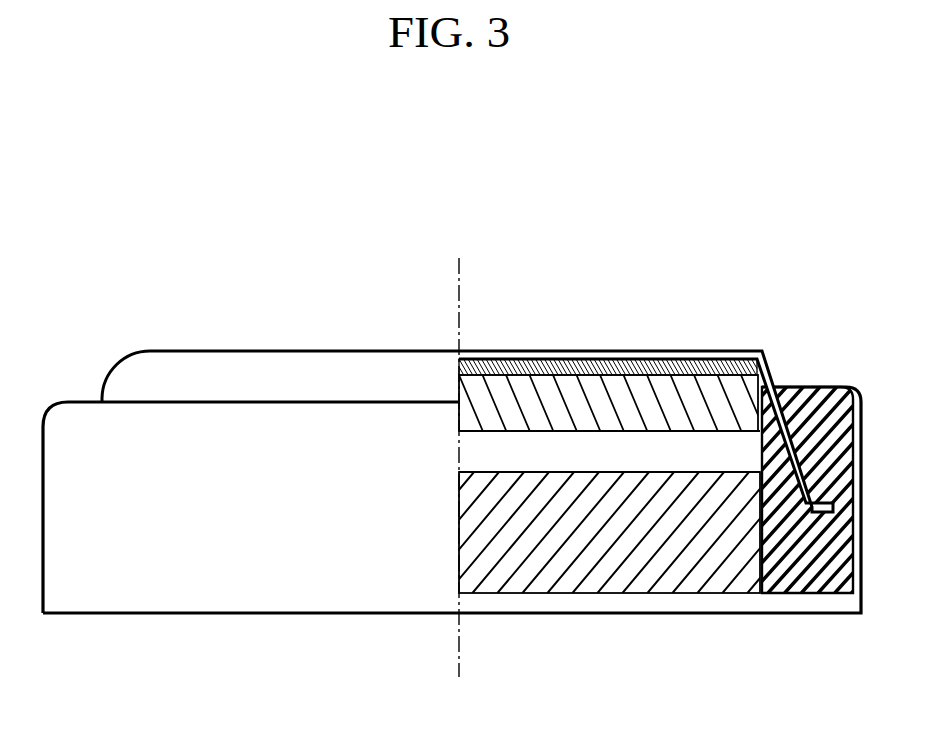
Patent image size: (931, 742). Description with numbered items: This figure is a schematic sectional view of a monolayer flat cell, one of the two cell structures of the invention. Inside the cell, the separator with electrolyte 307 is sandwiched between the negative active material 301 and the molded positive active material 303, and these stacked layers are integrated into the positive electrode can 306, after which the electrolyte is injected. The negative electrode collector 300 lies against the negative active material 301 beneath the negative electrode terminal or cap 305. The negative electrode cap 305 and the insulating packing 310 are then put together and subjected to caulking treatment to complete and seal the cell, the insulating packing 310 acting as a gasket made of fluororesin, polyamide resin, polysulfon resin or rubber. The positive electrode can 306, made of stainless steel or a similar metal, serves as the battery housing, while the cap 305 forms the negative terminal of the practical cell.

The negative electrode collector 300 is at (610, 360).
The negative active material 301 is at (692, 398).
The positive active material 303 is at (672, 572).
The negative electrode terminal (negative electrode cap) 305 is at (512, 348).
The positive electrode can 306 is at (770, 603).
The separator with electrolyte 307 is at (589, 452).
The insulating packing material 310 is at (810, 398).